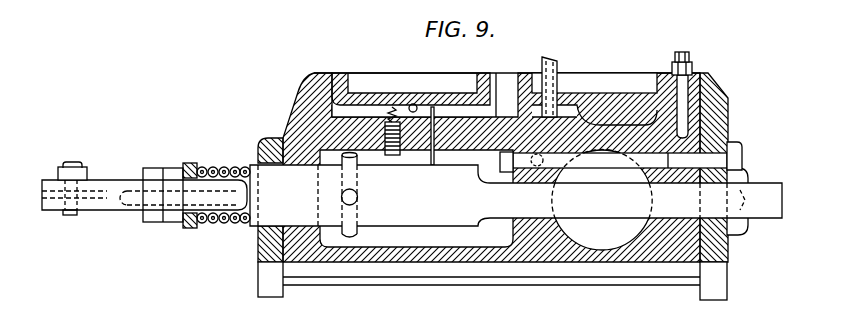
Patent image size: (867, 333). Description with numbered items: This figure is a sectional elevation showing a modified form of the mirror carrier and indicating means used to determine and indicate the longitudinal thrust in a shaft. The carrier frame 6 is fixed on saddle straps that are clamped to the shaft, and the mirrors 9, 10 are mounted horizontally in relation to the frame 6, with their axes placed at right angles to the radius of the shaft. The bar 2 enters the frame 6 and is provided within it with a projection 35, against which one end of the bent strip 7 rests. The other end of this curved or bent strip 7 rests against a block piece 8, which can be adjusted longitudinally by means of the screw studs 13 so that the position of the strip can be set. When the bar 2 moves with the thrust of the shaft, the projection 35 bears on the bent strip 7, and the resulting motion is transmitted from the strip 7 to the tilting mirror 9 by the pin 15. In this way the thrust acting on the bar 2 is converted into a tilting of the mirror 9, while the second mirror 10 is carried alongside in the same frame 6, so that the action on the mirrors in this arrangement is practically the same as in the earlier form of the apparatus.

The bar 2 is at (119, 182).
The carrier frame 6 is at (308, 105).
The bent strip 7 is at (492, 116).
The block piece 8 is at (504, 152).
The tilting mirror 9 is at (357, 93).
The mirror 10 is at (622, 100).
The screw studs 13 is at (738, 147).
The pin 15 is at (440, 133).
The projection 35 is at (343, 160).